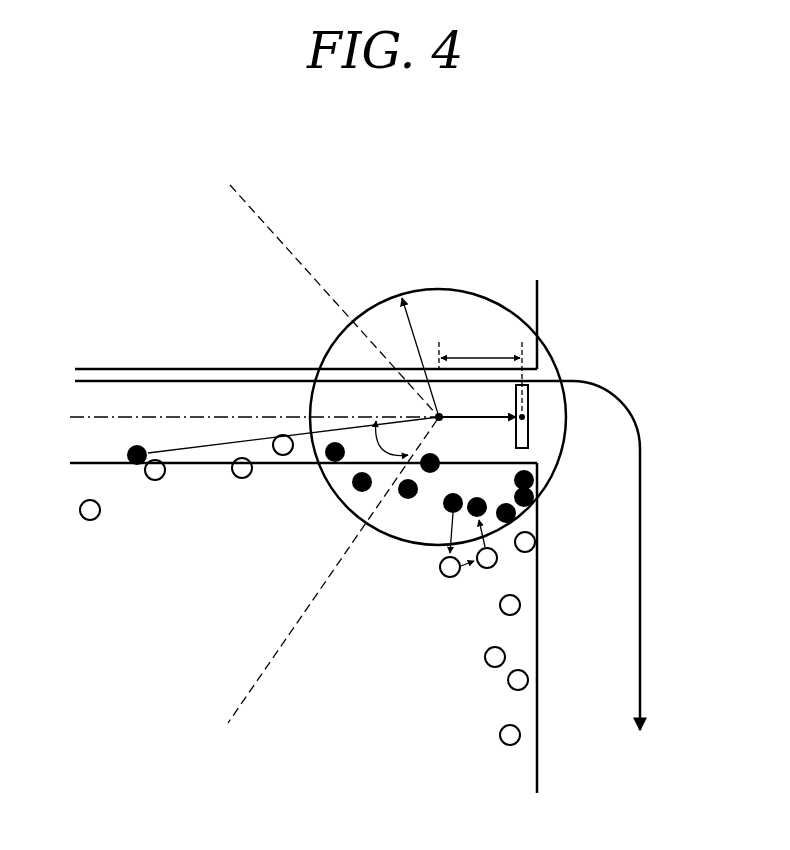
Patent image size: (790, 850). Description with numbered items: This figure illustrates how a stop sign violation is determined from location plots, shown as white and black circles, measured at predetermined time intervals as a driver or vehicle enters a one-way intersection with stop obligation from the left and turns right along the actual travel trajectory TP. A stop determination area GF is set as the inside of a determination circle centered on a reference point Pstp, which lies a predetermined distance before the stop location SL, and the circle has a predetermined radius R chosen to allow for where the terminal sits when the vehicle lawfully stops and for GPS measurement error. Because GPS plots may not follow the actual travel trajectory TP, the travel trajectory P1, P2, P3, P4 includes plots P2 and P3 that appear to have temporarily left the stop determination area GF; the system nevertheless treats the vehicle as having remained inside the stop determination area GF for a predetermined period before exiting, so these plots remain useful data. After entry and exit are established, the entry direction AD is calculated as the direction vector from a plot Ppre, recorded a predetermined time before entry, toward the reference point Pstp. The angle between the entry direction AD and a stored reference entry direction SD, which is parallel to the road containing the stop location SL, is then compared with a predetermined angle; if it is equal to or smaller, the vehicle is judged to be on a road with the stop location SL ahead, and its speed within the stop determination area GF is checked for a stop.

The actual travel trajectory TP is at (612, 392).
The reference entry direction SD is at (110, 415).
The entry direction AD is at (262, 436).
The stop determination area GF is at (447, 288).
The predetermined radius R is at (420, 357).
The reference point Pstp is at (458, 407).
The stop location SL is at (524, 420).
The preceding plot Ppre is at (151, 446).
The travel trajectory plot P1 is at (453, 514).
The travel trajectory plot P2 is at (457, 582).
The travel trajectory plot P3 is at (494, 558).
The travel trajectory plot P4 is at (481, 497).